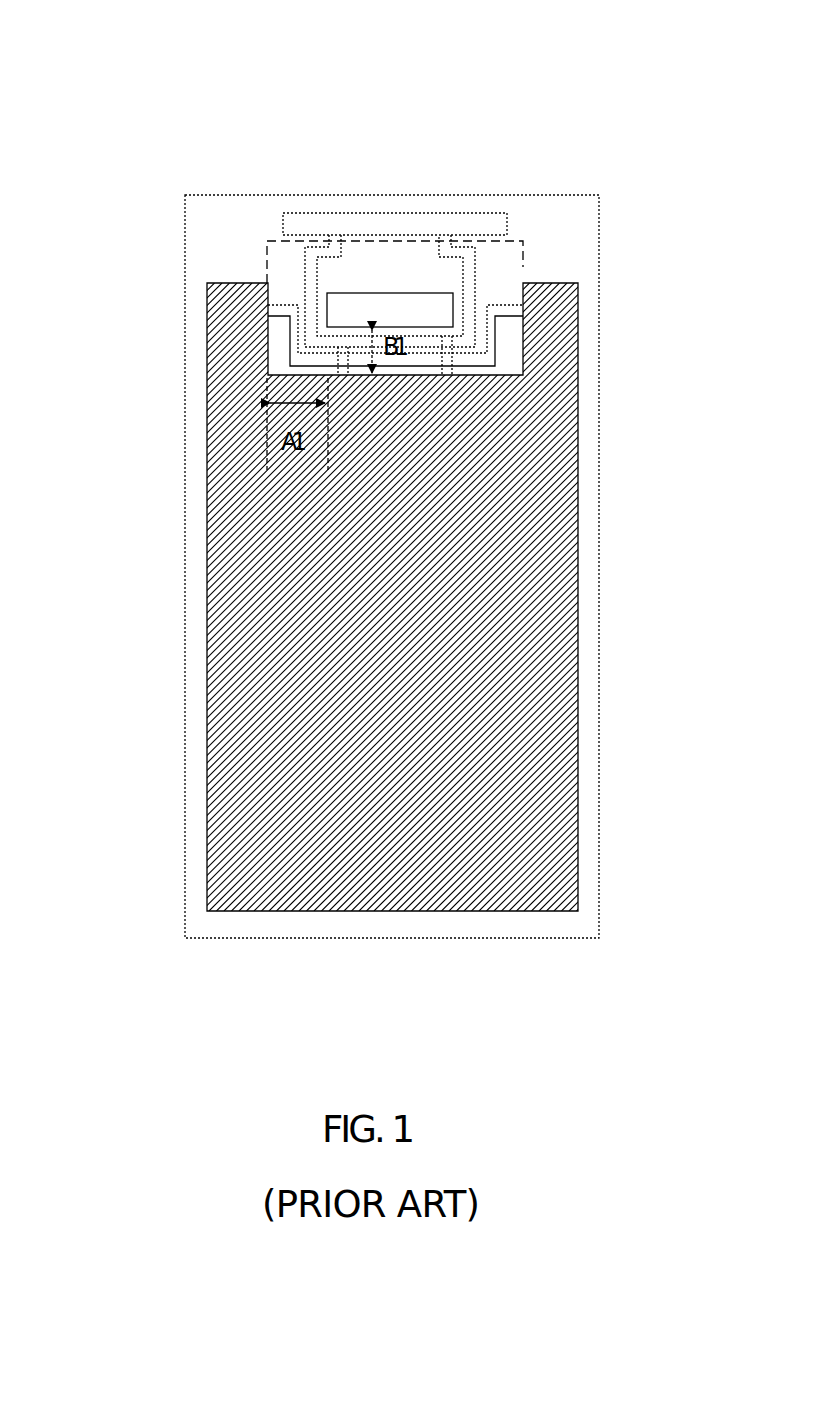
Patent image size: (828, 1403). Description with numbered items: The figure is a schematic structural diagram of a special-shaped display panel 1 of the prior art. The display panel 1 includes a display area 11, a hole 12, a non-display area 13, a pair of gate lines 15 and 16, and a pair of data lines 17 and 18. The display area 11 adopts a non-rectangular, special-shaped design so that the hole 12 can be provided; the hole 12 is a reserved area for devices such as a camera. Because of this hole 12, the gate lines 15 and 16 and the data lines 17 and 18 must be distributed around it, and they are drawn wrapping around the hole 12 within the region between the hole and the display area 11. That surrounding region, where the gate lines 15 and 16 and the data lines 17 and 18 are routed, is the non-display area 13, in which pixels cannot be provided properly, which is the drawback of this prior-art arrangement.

The display panel 1 is at (155, 60).
The display area 11 is at (578, 382).
The hole 12 is at (400, 292).
The non-display area 13 is at (523, 267).
The gate line 15 is at (270, 307).
The gate line 16 is at (268, 316).
The data line 17 is at (477, 280).
The data line 18 is at (480, 242).